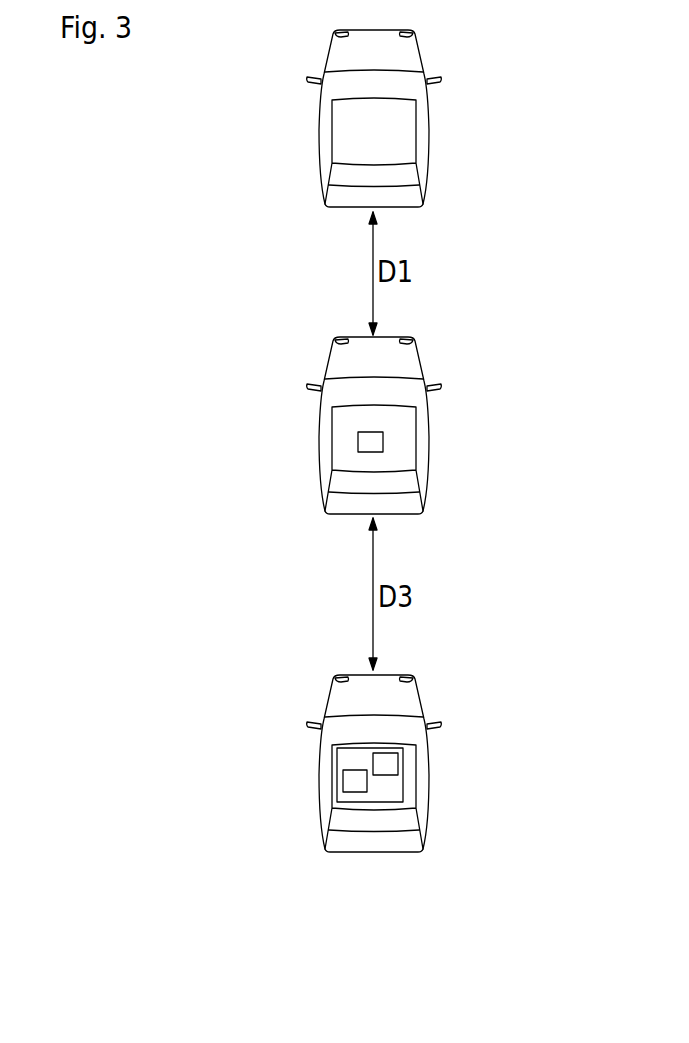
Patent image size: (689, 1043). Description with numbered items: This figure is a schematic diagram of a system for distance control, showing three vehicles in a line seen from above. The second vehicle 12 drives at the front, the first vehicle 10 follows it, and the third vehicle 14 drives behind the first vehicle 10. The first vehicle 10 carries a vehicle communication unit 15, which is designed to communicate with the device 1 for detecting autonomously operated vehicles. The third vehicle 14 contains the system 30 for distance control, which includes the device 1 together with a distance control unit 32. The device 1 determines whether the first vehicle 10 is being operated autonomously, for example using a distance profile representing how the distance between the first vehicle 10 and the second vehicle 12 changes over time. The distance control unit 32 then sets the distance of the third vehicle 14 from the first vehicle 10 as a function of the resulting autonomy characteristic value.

The device for detecting autonomously operated vehicles 1 is at (352, 783).
The first vehicle 10 is at (428, 467).
The second vehicle 12 is at (430, 132).
The third vehicle 14 is at (428, 789).
The vehicle communication unit 15 is at (358, 441).
The system for distance control 30 is at (378, 797).
The distance control unit 32 is at (390, 765).